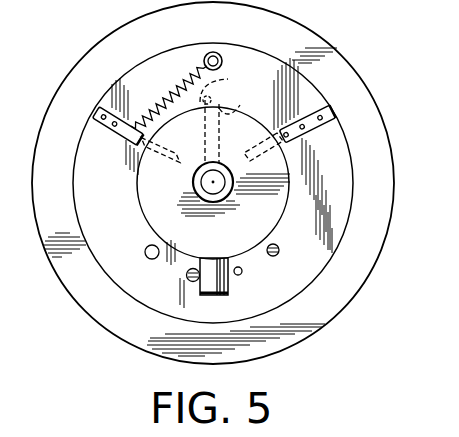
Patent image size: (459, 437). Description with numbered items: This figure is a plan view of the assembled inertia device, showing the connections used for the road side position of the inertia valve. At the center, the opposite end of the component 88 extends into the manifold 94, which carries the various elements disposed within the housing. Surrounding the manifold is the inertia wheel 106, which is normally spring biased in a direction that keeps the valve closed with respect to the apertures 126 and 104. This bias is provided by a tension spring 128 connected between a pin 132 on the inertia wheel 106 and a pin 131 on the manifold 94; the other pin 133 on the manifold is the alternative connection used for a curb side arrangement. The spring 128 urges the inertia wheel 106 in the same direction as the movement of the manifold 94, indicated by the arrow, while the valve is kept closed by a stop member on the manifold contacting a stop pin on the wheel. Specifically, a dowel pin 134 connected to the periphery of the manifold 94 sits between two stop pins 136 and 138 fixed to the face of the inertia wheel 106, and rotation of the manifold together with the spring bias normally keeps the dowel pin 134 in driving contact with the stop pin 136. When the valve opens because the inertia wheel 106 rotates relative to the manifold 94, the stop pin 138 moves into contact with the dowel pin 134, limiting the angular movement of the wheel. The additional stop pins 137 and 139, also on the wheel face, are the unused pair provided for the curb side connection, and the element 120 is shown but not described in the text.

The inertia wheel 106 is at (375, 162).
The manifold 94 is at (266, 208).
The component 88 is at (224, 200).
The tension spring 128 is at (173, 80).
The pin 132 is at (210, 52).
The aperture 104 is at (219, 142).
The aperture 126 is at (214, 86).
The ratchet 120 is at (238, 112).
The pin 131 is at (95, 118).
The pin 133 is at (328, 124).
The stop pin 137 is at (145, 251).
The stop pin 136 is at (187, 274).
The dowel pin 134 is at (210, 283).
The stop pin 138 is at (275, 257).
The stop pin 139 is at (243, 275).